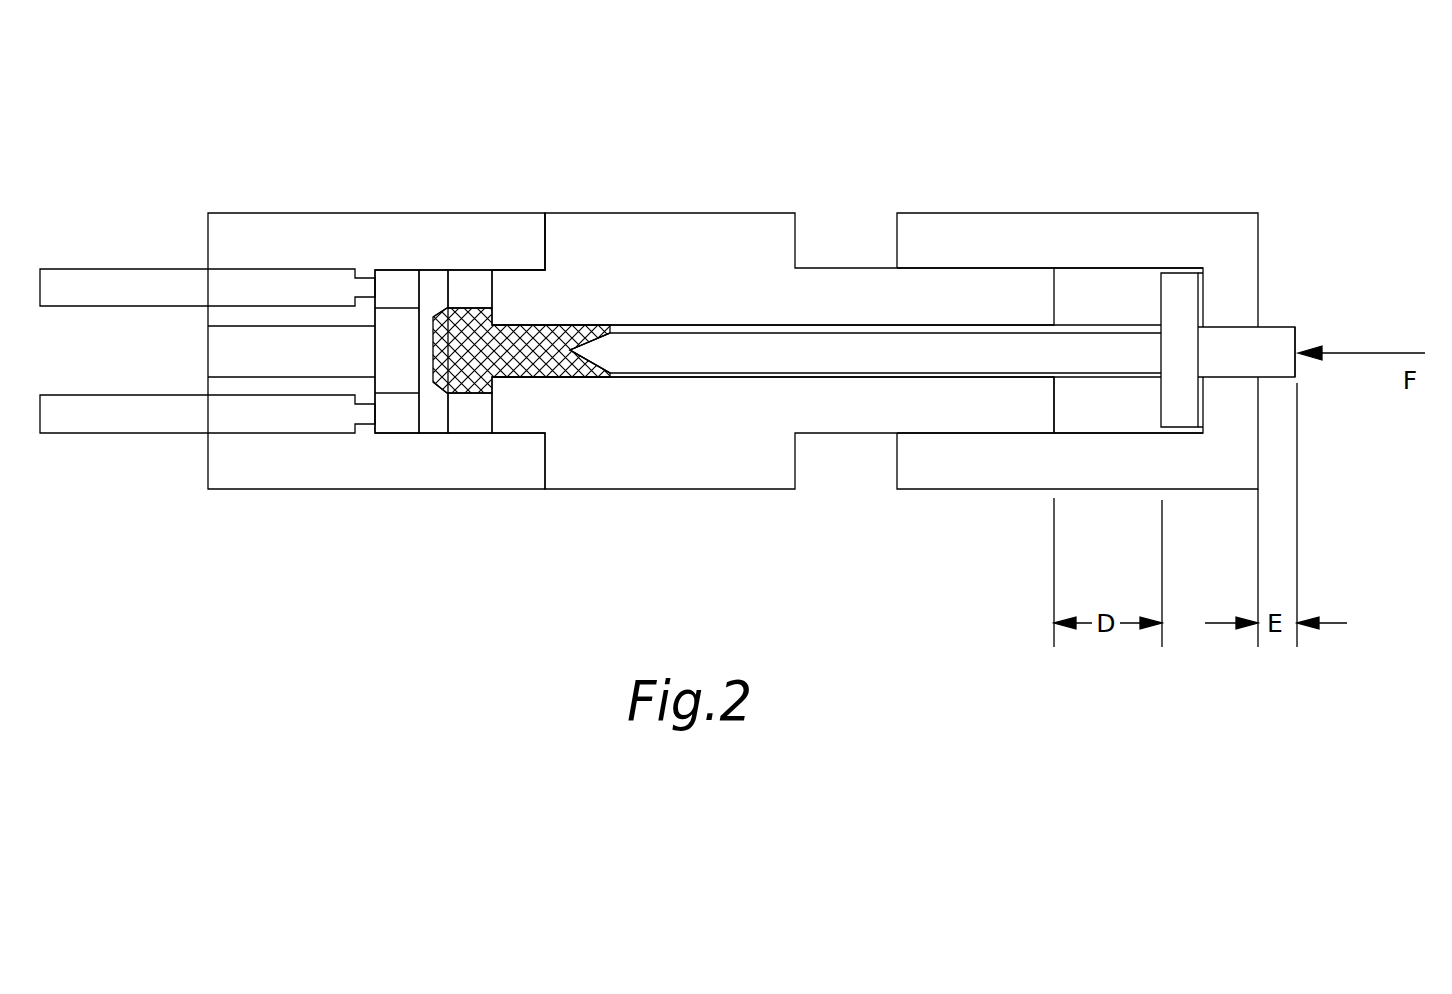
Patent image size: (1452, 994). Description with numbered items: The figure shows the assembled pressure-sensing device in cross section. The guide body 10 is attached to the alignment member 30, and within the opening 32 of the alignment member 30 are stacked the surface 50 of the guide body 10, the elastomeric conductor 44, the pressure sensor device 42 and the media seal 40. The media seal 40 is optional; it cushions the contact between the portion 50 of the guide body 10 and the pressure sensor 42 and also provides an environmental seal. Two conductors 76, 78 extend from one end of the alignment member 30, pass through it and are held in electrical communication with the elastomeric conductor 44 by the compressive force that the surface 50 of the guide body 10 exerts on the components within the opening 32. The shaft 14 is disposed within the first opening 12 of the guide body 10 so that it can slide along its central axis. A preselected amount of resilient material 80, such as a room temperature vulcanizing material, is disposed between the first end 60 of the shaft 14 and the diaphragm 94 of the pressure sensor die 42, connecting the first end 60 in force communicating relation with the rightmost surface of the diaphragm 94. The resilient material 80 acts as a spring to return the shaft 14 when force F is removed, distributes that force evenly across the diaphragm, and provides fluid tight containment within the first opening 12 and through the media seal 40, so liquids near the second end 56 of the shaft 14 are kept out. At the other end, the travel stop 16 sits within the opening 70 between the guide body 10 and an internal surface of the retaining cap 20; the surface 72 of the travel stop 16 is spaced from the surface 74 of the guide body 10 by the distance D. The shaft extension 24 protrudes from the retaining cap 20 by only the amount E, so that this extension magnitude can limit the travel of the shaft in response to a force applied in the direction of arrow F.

The guide body 10 is at (738, 246).
The first opening 12 is at (637, 363).
The shaft 14 is at (803, 353).
The travel stop 16 is at (1182, 293).
The retaining cap 20 is at (967, 242).
The shaft extension 24 is at (1272, 336).
The alignment member 30 is at (288, 455).
The opening 32 is at (521, 279).
The media seal 40 is at (466, 287).
The pressure sensor device 42 is at (427, 288).
The elastomeric conductor 44 is at (386, 290).
The surface 50 is at (478, 414).
The second end 56 is at (1280, 367).
The first end 60 is at (603, 333).
The opening 70 is at (1108, 297).
The surface 72 is at (1158, 398).
The surface 74 is at (1054, 394).
The conductor 76 is at (78, 417).
The conductor 78 is at (71, 288).
The resilient material 80 is at (460, 367).
The diaphragm 94 is at (427, 363).